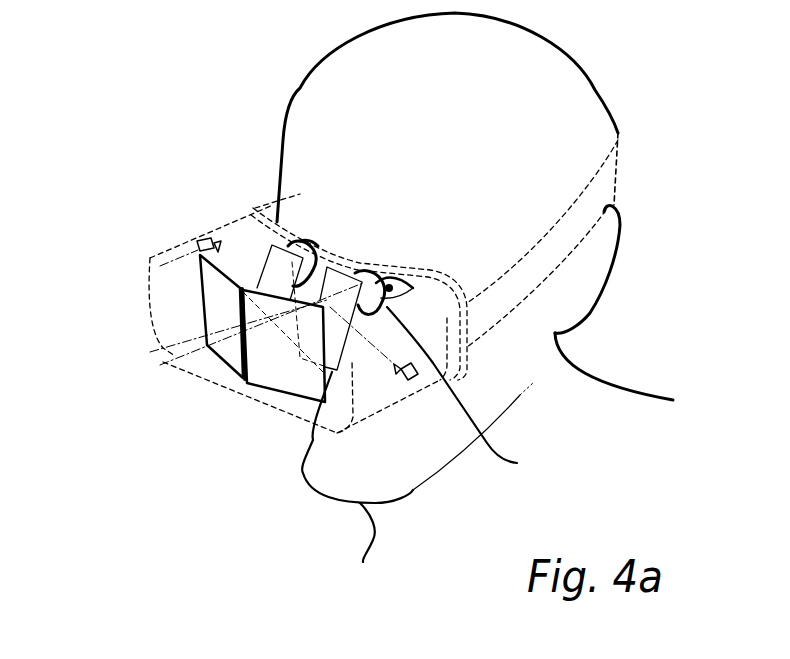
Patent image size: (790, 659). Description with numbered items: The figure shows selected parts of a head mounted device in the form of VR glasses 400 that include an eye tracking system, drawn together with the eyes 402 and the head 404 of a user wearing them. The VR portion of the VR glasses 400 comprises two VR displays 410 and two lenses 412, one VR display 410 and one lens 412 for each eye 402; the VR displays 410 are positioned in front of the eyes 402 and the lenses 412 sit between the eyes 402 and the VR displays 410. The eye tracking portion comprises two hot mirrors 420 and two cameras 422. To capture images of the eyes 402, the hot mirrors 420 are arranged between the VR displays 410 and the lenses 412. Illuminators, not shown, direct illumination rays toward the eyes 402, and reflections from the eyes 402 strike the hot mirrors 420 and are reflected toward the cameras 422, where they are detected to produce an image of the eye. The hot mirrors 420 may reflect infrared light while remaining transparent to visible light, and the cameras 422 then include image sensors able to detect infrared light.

The VR glasses 400 is at (150, 262).
The eyes 402 is at (303, 243).
The head 404 is at (592, 78).
The VR displays 410 is at (223, 355).
The lenses 412 is at (328, 258).
The hot mirrors 420 is at (263, 263).
The cameras 422 is at (202, 242).